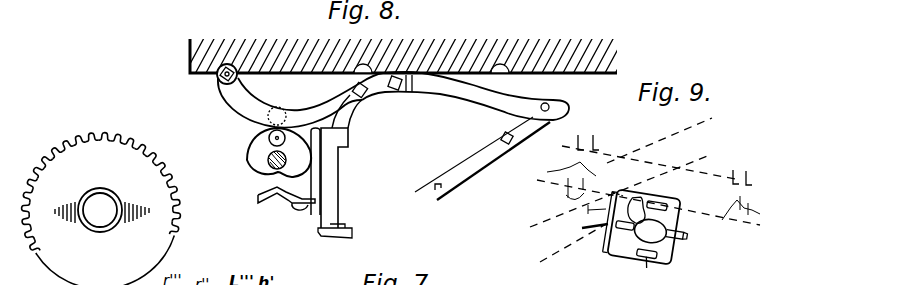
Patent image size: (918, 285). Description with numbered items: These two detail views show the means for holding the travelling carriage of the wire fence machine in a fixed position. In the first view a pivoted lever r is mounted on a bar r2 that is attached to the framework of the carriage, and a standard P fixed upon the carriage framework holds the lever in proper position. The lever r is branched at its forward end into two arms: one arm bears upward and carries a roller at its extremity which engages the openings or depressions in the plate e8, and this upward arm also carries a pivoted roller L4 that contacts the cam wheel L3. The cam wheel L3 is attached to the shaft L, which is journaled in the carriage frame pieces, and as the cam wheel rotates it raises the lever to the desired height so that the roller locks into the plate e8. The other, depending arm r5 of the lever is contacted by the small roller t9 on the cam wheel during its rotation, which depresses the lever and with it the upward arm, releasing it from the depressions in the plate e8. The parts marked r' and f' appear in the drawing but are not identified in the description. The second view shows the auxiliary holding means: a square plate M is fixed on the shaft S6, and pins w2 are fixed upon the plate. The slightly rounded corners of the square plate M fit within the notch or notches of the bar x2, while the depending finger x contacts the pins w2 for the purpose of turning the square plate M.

In FIG. 8, the plate e8 is at (410, 63).
In FIG. 8, the pivoted lever r is at (393, 100).
In FIG. 8, the pivot of arm r' is at (243, 57).
In FIG. 8, the bar r2 is at (475, 164).
In FIG. 8, the depending arm r5 is at (265, 204).
In FIG. 8, the shaft L is at (271, 162).
In FIG. 8, the cam wheel L3 is at (268, 138).
In FIG. 8, the pivoted roller L4 is at (280, 115).
In FIG. 8, the small roller t9 is at (285, 158).
In FIG. 8, the standard P is at (326, 178).
In FIG. 8, the gear wheel f' is at (105, 208).
In FIG. 9, the square plate M is at (680, 206).
In FIG. 9, the shaft S6 is at (606, 191).
In FIG. 9, the pins w2 is at (620, 229).
In FIG. 9, the depending finger x is at (630, 220).
In FIG. 9, the bar x2 is at (673, 158).